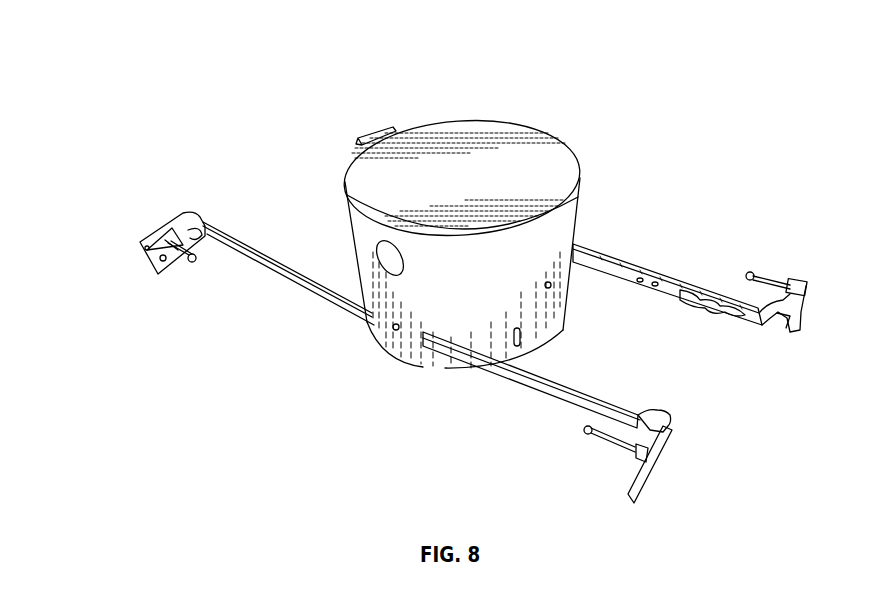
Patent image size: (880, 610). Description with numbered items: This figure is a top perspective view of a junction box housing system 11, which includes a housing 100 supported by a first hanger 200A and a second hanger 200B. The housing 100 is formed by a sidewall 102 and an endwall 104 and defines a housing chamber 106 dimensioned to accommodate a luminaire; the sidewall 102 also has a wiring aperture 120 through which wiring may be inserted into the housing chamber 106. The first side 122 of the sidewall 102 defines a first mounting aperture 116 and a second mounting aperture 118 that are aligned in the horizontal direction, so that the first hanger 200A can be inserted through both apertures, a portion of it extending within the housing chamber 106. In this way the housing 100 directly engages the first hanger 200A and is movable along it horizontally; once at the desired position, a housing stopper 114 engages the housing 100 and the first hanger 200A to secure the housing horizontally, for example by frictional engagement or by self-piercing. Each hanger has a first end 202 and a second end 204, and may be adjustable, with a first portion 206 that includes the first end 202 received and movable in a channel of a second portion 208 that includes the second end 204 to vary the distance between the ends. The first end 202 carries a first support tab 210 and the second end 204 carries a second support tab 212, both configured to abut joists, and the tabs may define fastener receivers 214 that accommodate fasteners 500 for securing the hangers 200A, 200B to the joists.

The junction box housing system 11 is at (674, 110).
The housing 100 is at (462, 258).
The sidewall 102 is at (570, 297).
The endwall 104 is at (493, 135).
The housing chamber 106 is at (370, 250).
The housing stopper 114 is at (387, 337).
The first mounting aperture 116 is at (430, 365).
The second mounting aperture 118 is at (390, 328).
The wiring aperture 120 is at (405, 260).
The first side 122 is at (400, 350).
The first hanger 200A is at (533, 397).
The second hanger 200B is at (635, 263).
The first end 202 is at (185, 212).
The second end 204 is at (807, 292).
The first portion 206 is at (142, 258).
The second portion 208 is at (763, 320).
The first support tab 210 is at (160, 275).
The second support tab 212 is at (800, 313).
The fastener receiver 214 is at (160, 242).
The fastener 500 is at (198, 262).